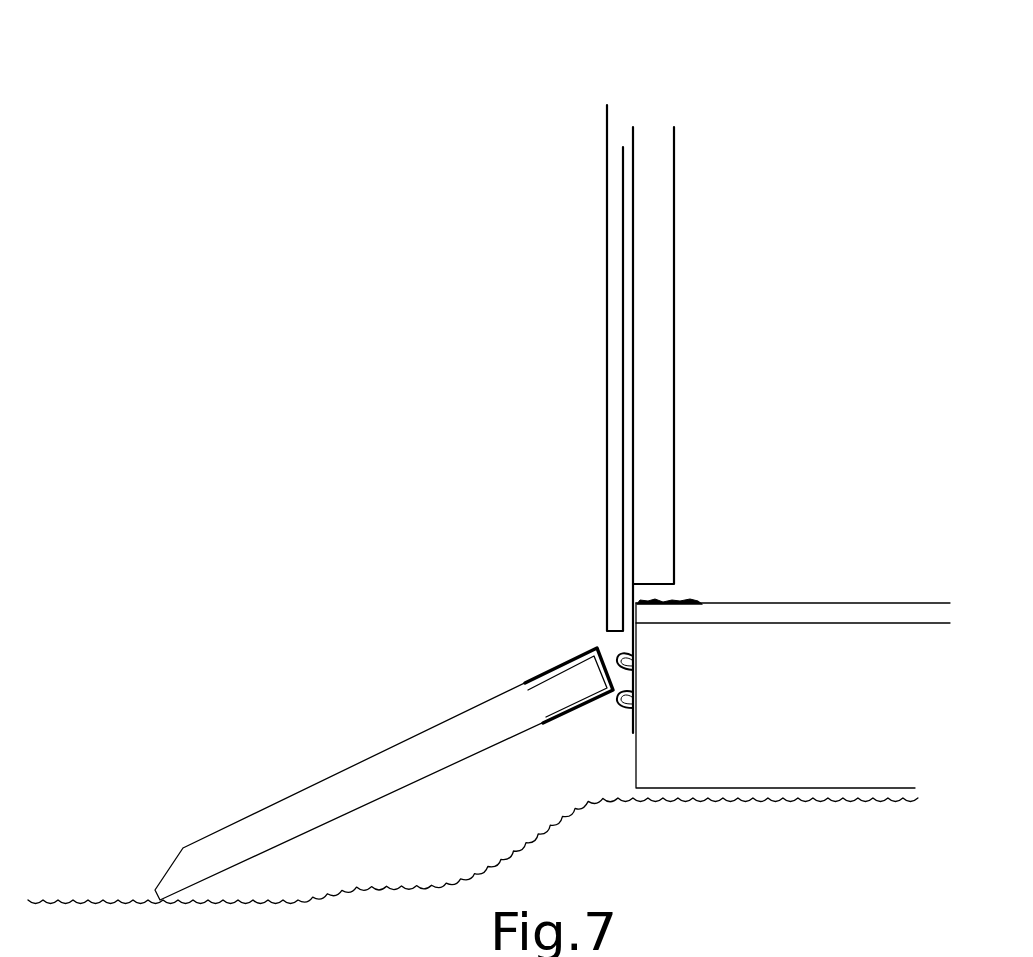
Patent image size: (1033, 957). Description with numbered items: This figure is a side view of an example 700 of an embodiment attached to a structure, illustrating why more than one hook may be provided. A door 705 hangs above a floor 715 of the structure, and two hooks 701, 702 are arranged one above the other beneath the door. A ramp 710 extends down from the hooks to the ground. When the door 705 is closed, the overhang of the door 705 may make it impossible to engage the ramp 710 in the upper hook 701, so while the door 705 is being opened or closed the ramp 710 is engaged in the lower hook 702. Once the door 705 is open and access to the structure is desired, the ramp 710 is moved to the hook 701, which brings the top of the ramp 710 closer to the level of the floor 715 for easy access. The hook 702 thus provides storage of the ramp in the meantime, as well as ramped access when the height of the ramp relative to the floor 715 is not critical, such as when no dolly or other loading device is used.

The example 700 is at (358, 231).
The door 705 is at (607, 453).
The floor 715 is at (748, 602).
The hook 701 is at (630, 657).
The hook 702 is at (623, 703).
The ramp 710 is at (355, 762).